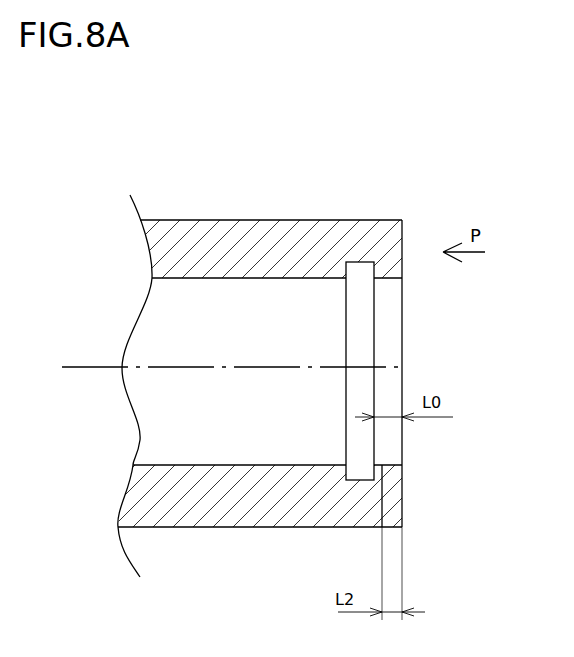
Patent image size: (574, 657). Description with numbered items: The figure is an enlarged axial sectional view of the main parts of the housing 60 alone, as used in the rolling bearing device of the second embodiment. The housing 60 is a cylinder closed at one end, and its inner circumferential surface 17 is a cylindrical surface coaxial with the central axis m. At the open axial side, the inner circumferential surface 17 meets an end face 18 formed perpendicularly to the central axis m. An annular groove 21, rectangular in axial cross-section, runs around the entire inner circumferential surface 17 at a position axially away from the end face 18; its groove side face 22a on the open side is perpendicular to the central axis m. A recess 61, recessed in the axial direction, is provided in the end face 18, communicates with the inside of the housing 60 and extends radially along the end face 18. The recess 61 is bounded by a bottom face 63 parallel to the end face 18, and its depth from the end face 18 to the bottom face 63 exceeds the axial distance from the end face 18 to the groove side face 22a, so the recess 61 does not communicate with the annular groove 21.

The housing 60 is at (217, 221).
The inner circumferential surface 17 is at (318, 465).
The end face 18 is at (402, 242).
The annular groove 21 is at (361, 265).
The bottom face 63 is at (383, 490).
The recess 61 is at (445, 514).
The groove side face 22a is at (375, 474).
The central axis m is at (82, 367).